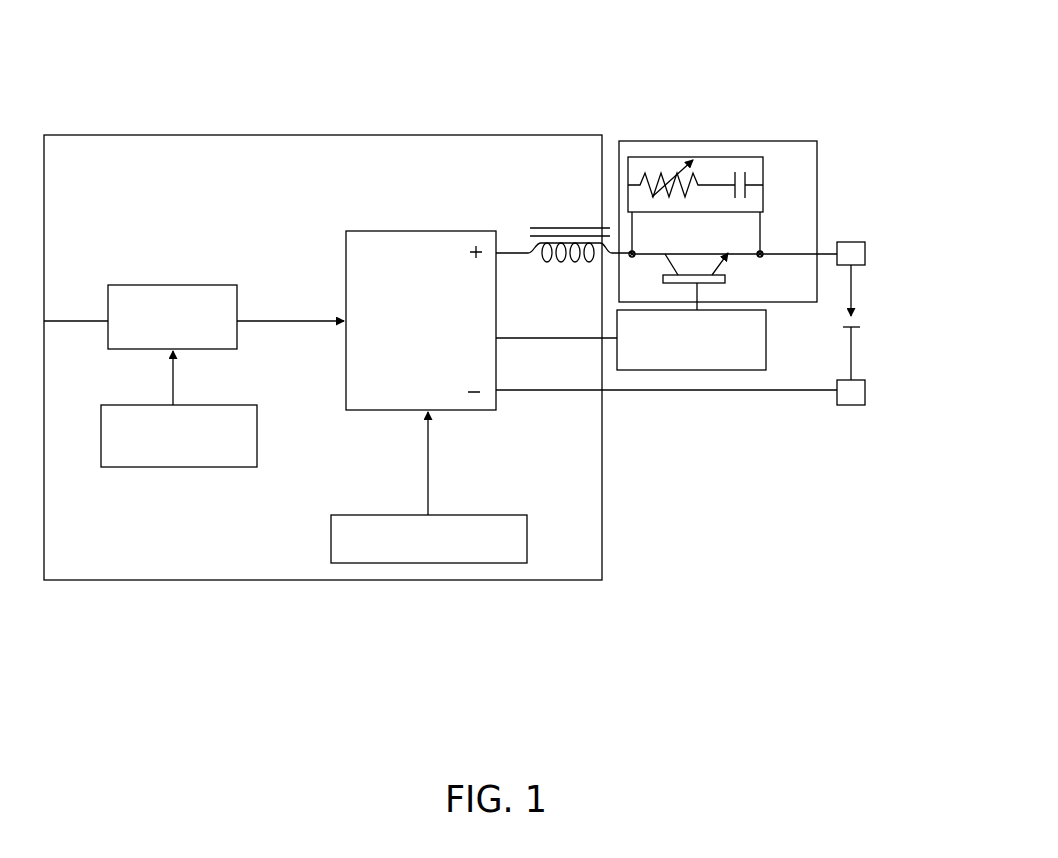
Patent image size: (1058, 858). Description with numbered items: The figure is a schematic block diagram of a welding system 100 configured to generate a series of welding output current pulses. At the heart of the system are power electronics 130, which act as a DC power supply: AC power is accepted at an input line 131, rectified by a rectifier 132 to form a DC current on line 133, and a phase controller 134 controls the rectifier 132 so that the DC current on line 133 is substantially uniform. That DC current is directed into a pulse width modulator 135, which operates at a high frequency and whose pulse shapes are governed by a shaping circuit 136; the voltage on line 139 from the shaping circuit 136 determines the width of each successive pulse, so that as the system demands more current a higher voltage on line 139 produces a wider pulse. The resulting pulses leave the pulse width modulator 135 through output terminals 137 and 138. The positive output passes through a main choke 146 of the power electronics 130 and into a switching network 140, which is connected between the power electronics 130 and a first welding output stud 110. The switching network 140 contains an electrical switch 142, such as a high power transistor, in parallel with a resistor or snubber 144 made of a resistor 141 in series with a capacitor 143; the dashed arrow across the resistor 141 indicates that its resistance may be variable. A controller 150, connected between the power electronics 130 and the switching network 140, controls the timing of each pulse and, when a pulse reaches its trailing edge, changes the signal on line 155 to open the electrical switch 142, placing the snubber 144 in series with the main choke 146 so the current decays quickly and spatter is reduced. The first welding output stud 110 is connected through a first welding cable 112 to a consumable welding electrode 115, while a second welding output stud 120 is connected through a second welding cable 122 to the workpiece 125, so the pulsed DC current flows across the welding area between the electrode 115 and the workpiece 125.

The welding system 100 is at (212, 68).
The first welding output stud 110 is at (851, 242).
The first welding cable 112 is at (855, 283).
The consumable welding electrode 115 is at (864, 300).
The second welding output stud 120 is at (850, 405).
The second welding cable 122 is at (850, 345).
The workpiece 125 is at (860, 333).
The power electronics 130 is at (160, 135).
The line 131 is at (75, 322).
The rectifier 132 is at (162, 285).
The line 133 is at (262, 322).
The phase controller 134 is at (175, 467).
The pulse width modulator 135 is at (420, 231).
The shaping circuit 136 is at (527, 540).
The output terminal 137 is at (512, 254).
The output terminal 138 is at (516, 391).
The line 139 is at (428, 473).
The switching network 140 is at (713, 141).
The resistor 141 is at (660, 172).
The electrical switch 142 is at (693, 272).
The capacitor 143 is at (740, 172).
The resistor or snubber 144 is at (763, 197).
The main choke 146 is at (572, 262).
The controller 150 is at (766, 315).
The line 155 is at (700, 290).